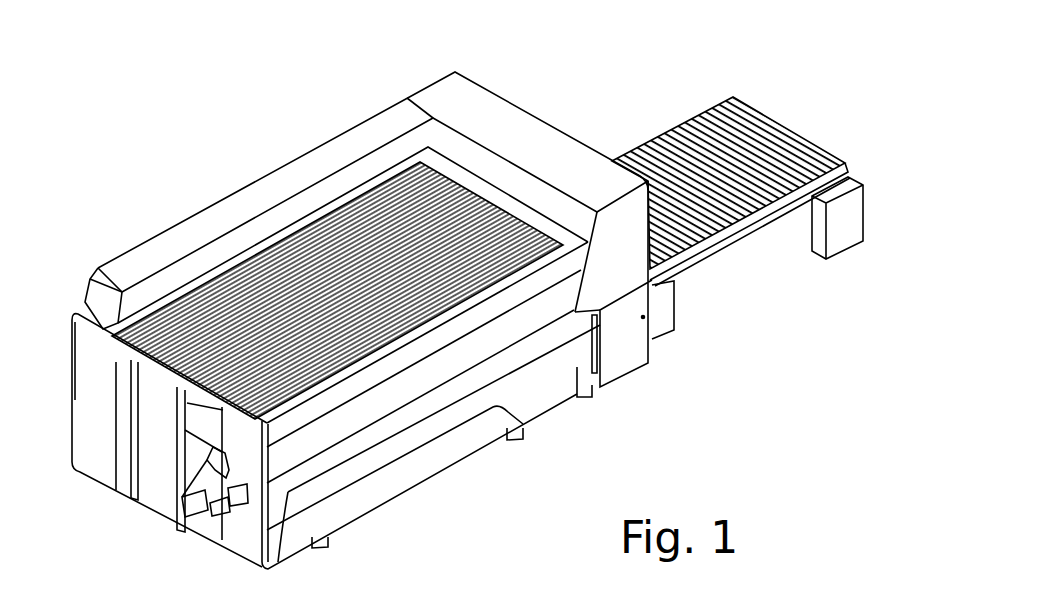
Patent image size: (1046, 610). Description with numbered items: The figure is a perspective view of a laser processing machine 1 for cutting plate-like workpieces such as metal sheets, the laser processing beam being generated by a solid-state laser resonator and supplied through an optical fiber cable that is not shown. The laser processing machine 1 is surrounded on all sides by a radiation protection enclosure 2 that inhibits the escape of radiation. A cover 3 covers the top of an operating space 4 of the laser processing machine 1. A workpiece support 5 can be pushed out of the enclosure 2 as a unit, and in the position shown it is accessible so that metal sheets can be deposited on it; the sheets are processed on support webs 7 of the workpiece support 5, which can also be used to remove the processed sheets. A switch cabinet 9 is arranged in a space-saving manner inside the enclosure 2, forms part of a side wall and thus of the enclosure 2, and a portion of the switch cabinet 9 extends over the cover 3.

The laser processing machine 1 is at (323, 125).
The radiation protection enclosure 2 is at (530, 373).
The cover 3 is at (208, 302).
The operating space 4 is at (283, 275).
The workpiece support 5 is at (670, 122).
The support webs 7 is at (782, 152).
The switch cabinet 9 is at (378, 125).